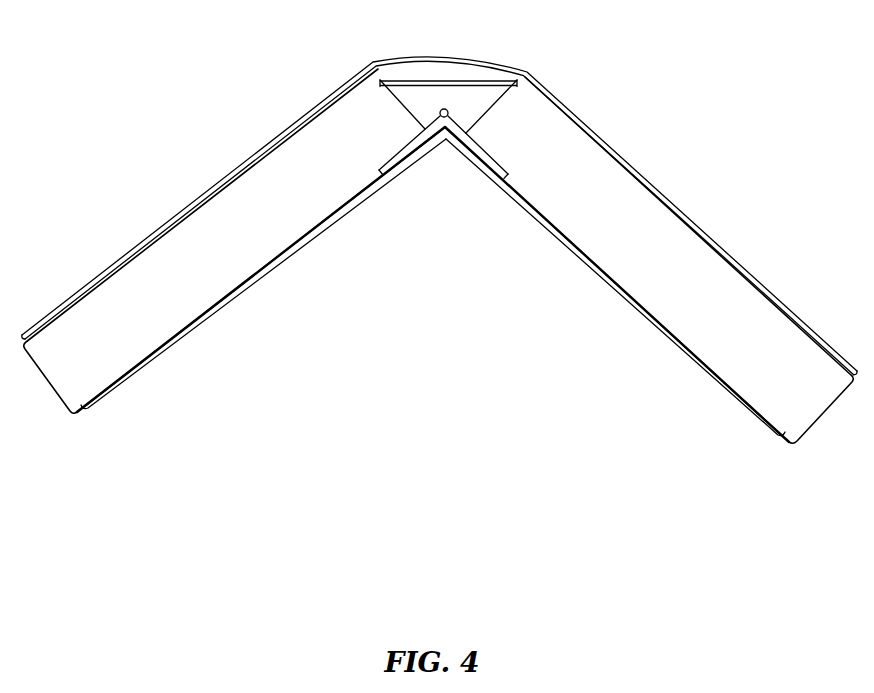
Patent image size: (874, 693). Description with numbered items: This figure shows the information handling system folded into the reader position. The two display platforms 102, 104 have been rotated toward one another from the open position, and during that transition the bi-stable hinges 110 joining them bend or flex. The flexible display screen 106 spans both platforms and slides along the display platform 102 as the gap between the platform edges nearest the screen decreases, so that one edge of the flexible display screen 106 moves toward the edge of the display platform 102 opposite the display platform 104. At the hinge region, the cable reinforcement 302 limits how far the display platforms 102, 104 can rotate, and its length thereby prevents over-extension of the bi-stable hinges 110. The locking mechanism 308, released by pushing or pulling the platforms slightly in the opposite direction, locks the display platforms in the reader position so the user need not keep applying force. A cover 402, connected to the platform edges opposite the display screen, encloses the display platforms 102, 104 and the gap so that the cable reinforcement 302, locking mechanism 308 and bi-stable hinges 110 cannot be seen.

The display platform 102 is at (69, 352).
The display platform 104 is at (793, 396).
The flexible display screen 106 is at (230, 308).
The bi-stable hinges 110 is at (490, 157).
The cable reinforcement 302 is at (416, 80).
The locking mechanism 308 is at (450, 111).
The cover 402 is at (293, 118).